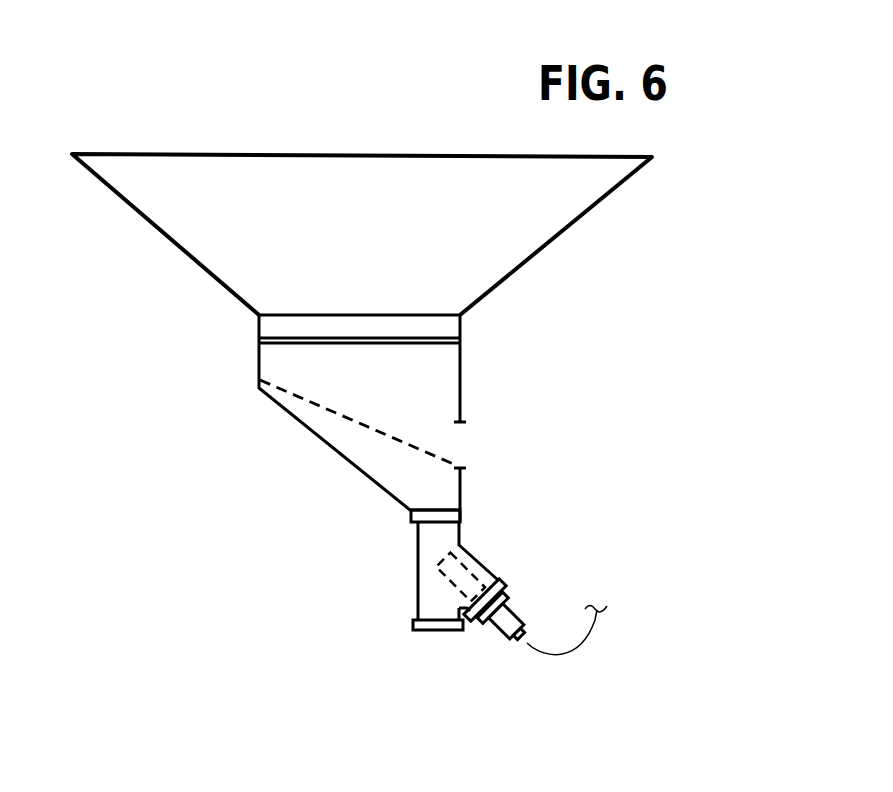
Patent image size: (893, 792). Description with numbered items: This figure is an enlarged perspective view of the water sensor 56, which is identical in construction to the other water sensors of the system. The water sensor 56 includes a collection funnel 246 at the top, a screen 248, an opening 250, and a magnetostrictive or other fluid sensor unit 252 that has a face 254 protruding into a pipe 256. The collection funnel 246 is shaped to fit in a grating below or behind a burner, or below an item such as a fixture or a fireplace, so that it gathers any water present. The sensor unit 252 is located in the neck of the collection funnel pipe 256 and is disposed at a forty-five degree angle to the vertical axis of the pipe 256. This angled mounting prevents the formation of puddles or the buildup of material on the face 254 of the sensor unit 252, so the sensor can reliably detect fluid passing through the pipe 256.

The water sensor 56 is at (427, 338).
The collection funnel 246 is at (527, 262).
The screen 248 is at (290, 392).
The opening 250 is at (453, 435).
The fluid sensor unit 252 is at (498, 623).
The face 254 is at (450, 554).
The pipe 256 is at (443, 533).